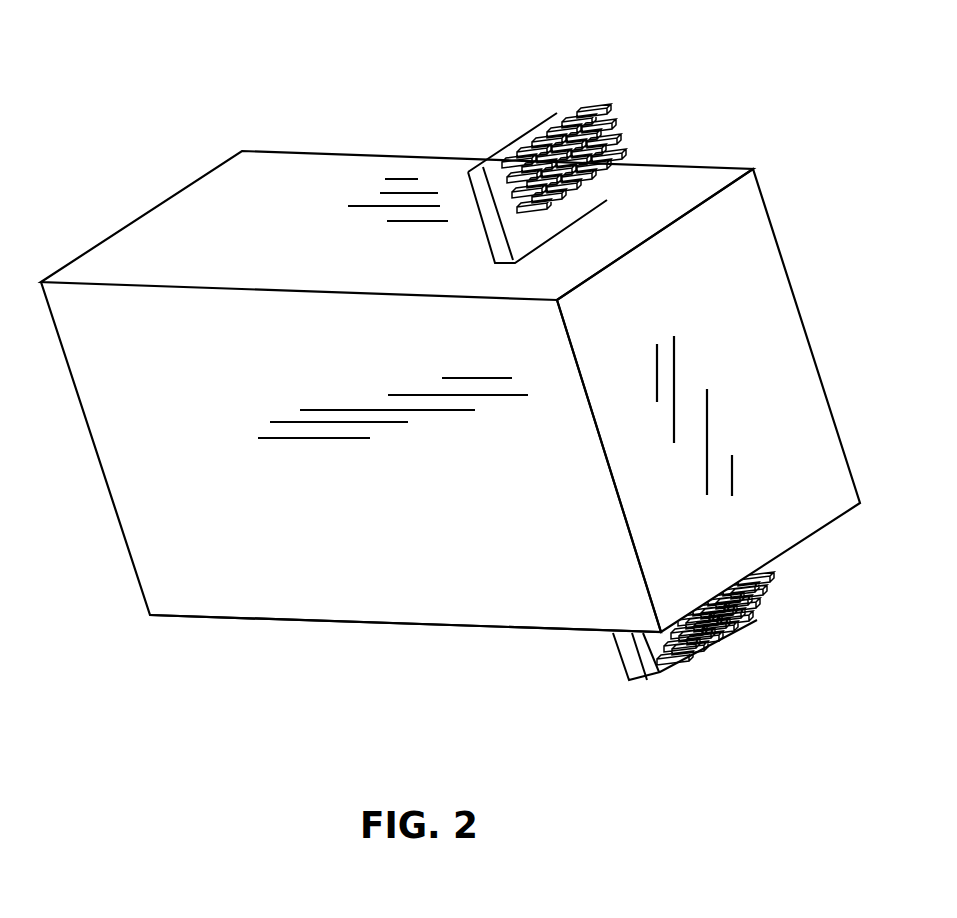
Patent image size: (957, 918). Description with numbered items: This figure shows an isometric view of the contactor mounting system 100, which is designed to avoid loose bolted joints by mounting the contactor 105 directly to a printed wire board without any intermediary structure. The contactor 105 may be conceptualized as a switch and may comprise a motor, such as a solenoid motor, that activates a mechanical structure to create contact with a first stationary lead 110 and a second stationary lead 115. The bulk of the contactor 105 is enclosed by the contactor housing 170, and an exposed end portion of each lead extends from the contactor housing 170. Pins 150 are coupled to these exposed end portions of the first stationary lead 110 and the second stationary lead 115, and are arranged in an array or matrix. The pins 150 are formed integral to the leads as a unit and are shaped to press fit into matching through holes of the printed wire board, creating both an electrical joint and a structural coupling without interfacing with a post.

The contactor mounting system 100 is at (772, 110).
The contactor 105 is at (793, 430).
The first stationary lead 110 is at (643, 670).
The second stationary lead 115 is at (553, 113).
The pins 150 is at (606, 130).
The contactor housing 170 is at (453, 590).